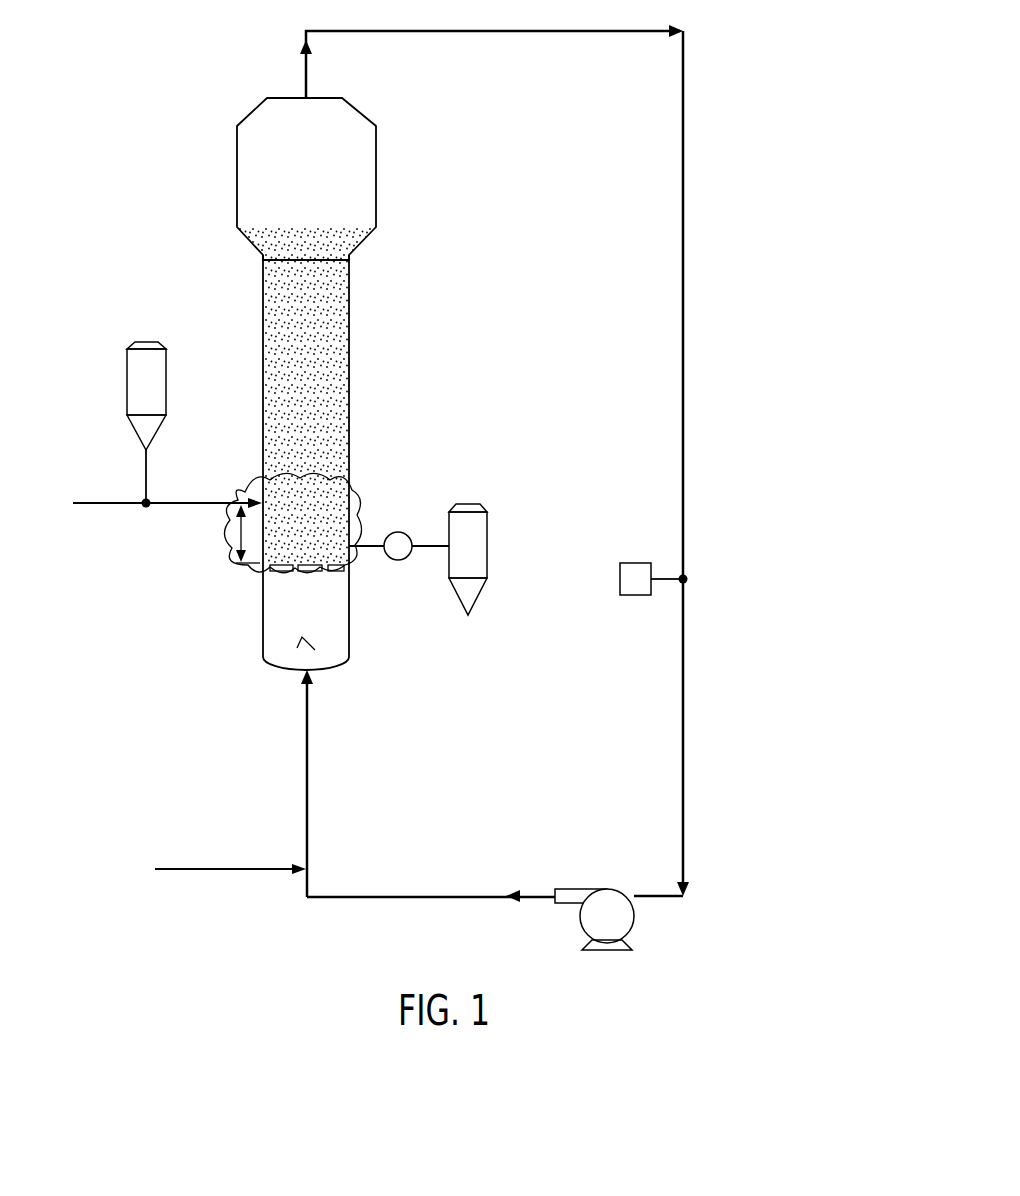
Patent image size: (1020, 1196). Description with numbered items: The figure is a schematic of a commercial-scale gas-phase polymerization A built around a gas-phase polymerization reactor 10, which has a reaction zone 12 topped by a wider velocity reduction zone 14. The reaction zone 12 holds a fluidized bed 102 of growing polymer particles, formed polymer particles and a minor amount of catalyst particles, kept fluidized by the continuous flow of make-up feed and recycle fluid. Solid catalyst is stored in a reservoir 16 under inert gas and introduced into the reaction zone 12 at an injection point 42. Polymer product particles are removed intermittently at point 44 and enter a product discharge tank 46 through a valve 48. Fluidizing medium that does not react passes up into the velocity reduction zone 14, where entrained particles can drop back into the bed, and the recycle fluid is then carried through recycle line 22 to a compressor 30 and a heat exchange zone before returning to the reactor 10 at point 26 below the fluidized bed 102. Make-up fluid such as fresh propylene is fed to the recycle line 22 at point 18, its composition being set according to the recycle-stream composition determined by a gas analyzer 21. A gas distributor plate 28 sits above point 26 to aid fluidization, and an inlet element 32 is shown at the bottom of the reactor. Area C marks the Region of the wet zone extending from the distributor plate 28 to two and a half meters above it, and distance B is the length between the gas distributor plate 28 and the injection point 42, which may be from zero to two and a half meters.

The gas-phase polymerization reactor 10 is at (138, 242).
The gas-phase polymerization A is at (138, 175).
The reaction zone 12 is at (263, 350).
The velocity reduction zone 14 is at (343, 183).
The fluidized bed 102 is at (312, 362).
The reservoir 16 is at (127, 380).
The injection point 42 is at (258, 493).
The area C (Region of the wet zone) C is at (258, 495).
The distance B is at (232, 527).
The gas distributor plate 28 is at (283, 572).
The gas inlet cone 32 is at (312, 640).
The point 26 (fluidizing medium return point) 26 is at (305, 676).
The point 18 (make-up feed point) 18 is at (306, 848).
The recycle line 22 is at (684, 455).
The gas analyzer 21 is at (637, 563).
The compressor 30 is at (630, 928).
The point 44 (product removal point) 44 is at (368, 541).
The valve 48 is at (398, 532).
The product discharge tank 46 is at (489, 545).